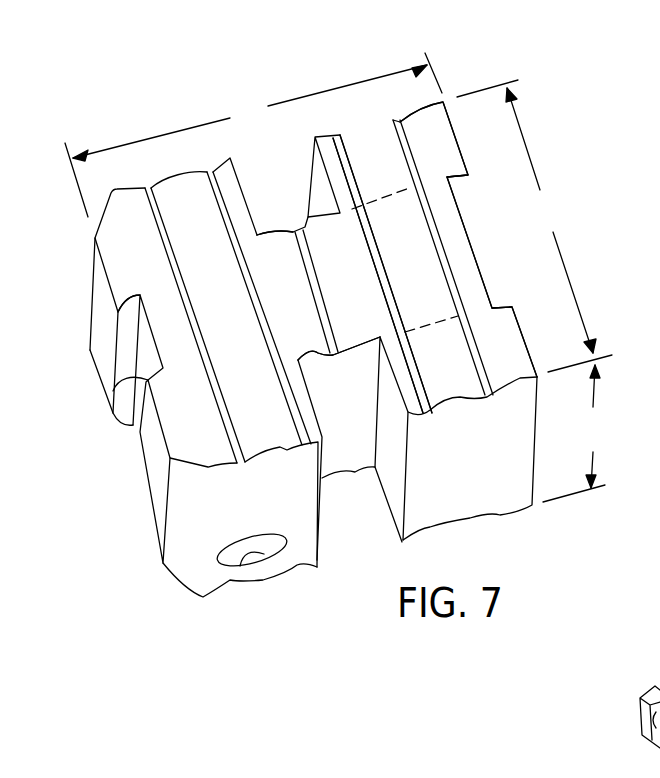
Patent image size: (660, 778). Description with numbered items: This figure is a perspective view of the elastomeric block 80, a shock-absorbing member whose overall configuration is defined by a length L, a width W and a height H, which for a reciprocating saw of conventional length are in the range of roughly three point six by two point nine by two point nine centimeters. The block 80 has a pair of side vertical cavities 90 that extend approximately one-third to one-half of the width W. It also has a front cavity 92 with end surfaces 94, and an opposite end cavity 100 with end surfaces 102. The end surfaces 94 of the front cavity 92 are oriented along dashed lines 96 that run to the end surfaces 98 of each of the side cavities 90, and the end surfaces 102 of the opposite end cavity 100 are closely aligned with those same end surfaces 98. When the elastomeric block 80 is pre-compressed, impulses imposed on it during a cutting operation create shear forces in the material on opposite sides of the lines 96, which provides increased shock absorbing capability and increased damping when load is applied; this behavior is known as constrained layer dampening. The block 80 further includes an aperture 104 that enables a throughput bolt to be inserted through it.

The elastomeric block 80 is at (453, 80).
The side vertical cavities 90 is at (290, 163).
The front cavity 92 is at (473, 257).
The end surfaces 94 is at (460, 195).
The dashed lines 96 is at (390, 194).
The end surfaces 98 is at (268, 232).
The opposite end cavity 100 is at (147, 352).
The end surfaces 102 is at (127, 325).
The aperture 104 is at (263, 558).